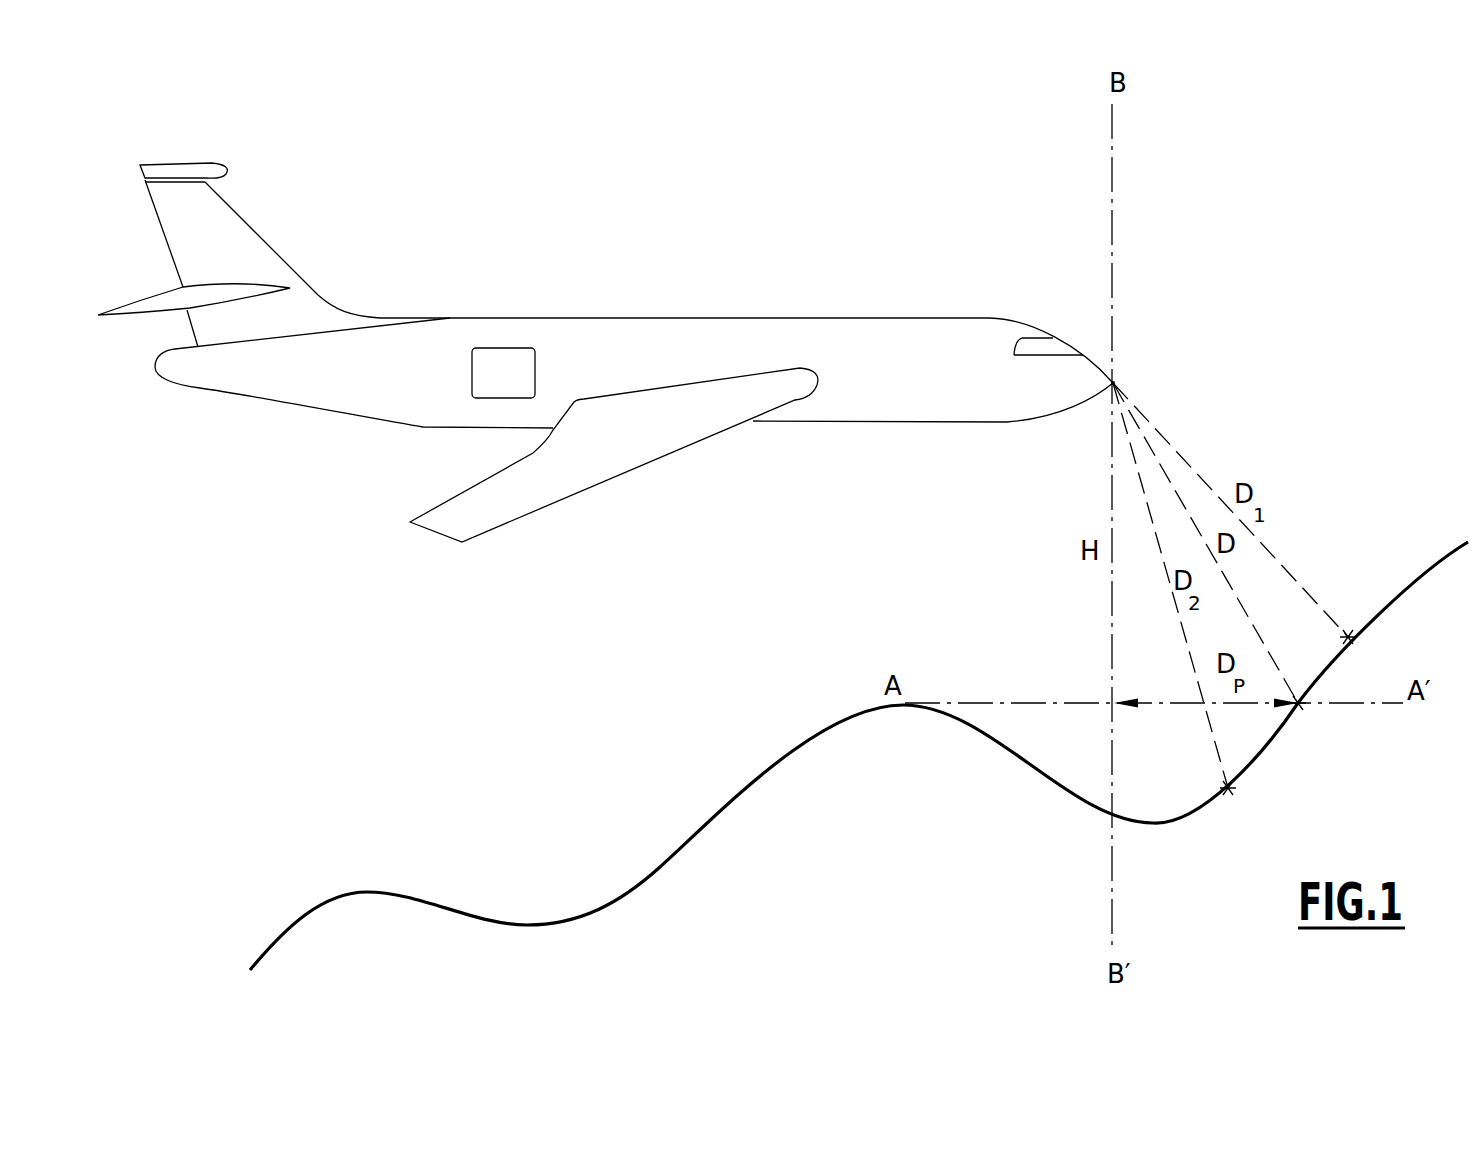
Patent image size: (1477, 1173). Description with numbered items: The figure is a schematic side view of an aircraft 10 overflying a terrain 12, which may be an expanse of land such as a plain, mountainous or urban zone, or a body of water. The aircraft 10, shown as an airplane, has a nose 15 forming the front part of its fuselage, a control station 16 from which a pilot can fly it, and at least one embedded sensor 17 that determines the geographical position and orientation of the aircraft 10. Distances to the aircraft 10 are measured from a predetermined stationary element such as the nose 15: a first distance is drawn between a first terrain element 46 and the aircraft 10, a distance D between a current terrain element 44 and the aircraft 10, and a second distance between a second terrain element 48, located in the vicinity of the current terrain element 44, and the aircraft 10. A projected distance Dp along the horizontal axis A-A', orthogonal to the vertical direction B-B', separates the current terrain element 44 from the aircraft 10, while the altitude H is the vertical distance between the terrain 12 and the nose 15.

The aircraft 10 is at (562, 262).
The terrain 12 is at (293, 897).
The nose 15 is at (1127, 378).
The control station 16 is at (1072, 340).
The embedded sensor 17 is at (517, 388).
The current terrain element 44 is at (1306, 716).
The first terrain element 46 is at (1358, 642).
The second terrain element 48 is at (1238, 802).